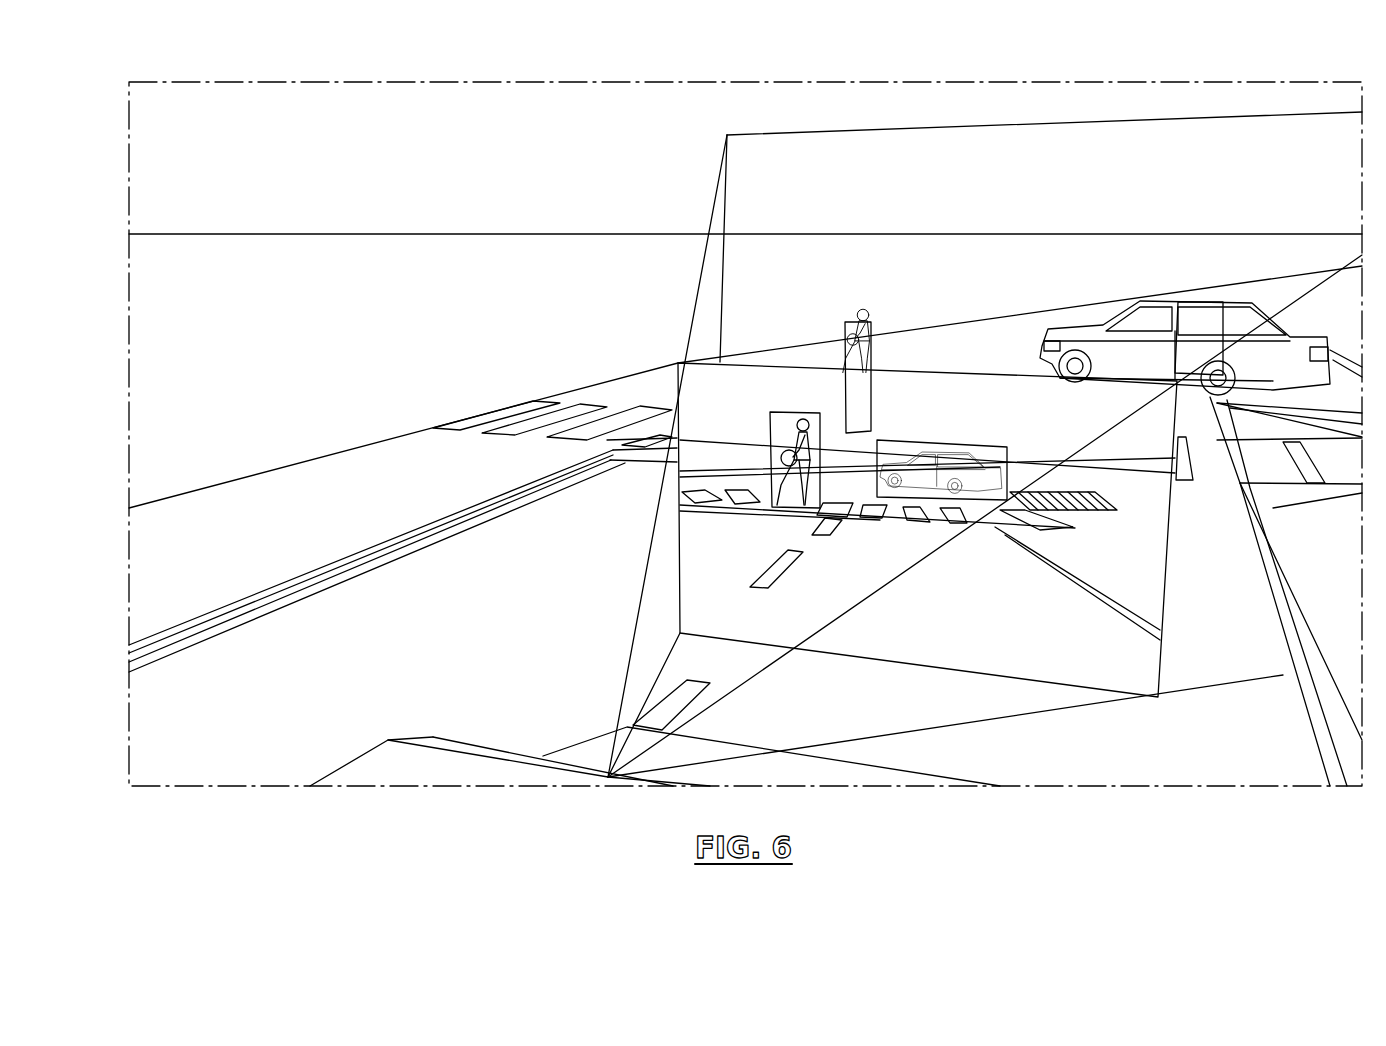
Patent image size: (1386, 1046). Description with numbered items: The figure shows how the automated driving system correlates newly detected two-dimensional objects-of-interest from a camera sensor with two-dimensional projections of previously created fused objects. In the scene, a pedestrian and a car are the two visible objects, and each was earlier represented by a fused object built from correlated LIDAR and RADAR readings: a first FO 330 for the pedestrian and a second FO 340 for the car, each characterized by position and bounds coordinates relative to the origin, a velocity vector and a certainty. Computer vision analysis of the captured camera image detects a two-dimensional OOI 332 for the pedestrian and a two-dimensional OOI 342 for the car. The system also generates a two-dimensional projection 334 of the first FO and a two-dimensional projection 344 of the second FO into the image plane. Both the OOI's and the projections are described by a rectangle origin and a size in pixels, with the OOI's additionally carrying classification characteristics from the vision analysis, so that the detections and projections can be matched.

The first fused object 330 is at (873, 345).
The two-dimensional object-of-interest for the pedestrian 332 is at (770, 440).
The two-dimensional projection of the first fused object 334 is at (772, 468).
The second fused object 340 is at (1192, 300).
The two-dimensional object-of-interest for the car 342 is at (886, 440).
The two-dimensional projection of the second fused object 344 is at (957, 487).